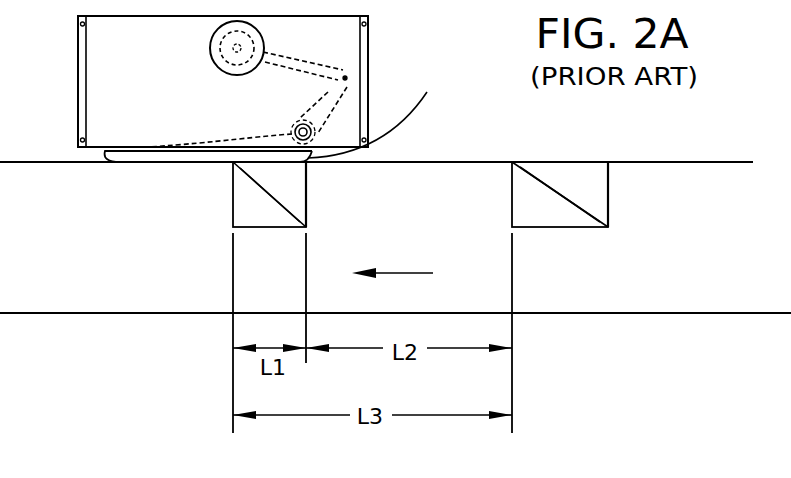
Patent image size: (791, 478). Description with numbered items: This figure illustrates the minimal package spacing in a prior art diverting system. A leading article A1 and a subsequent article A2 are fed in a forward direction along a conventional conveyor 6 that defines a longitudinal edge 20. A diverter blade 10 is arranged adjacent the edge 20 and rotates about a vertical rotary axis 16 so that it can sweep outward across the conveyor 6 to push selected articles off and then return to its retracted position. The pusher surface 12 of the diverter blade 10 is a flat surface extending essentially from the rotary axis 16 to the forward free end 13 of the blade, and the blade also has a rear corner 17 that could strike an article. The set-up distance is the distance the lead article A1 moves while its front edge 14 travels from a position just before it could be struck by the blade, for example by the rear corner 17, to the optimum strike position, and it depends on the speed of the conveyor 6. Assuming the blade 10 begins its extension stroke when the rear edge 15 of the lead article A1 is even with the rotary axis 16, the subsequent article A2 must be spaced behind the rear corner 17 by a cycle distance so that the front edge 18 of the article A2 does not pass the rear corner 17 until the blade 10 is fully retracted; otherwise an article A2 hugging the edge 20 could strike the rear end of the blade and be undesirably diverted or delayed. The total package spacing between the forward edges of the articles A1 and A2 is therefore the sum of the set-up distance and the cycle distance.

The conveyor 6 is at (687, 178).
The diverter blade 10 is at (162, 153).
The pusher surface 12 is at (215, 162).
The forward free end 13 is at (108, 160).
The front edge 14 is at (233, 208).
The rear edge 15 is at (307, 183).
The rotary axis 16 is at (299, 127).
The rear corner 17 is at (377, 111).
The front edge 18 is at (513, 193).
The longitudinal edge 20 is at (637, 159).
The leading article A1 is at (293, 193).
The subsequent article A2 is at (597, 192).